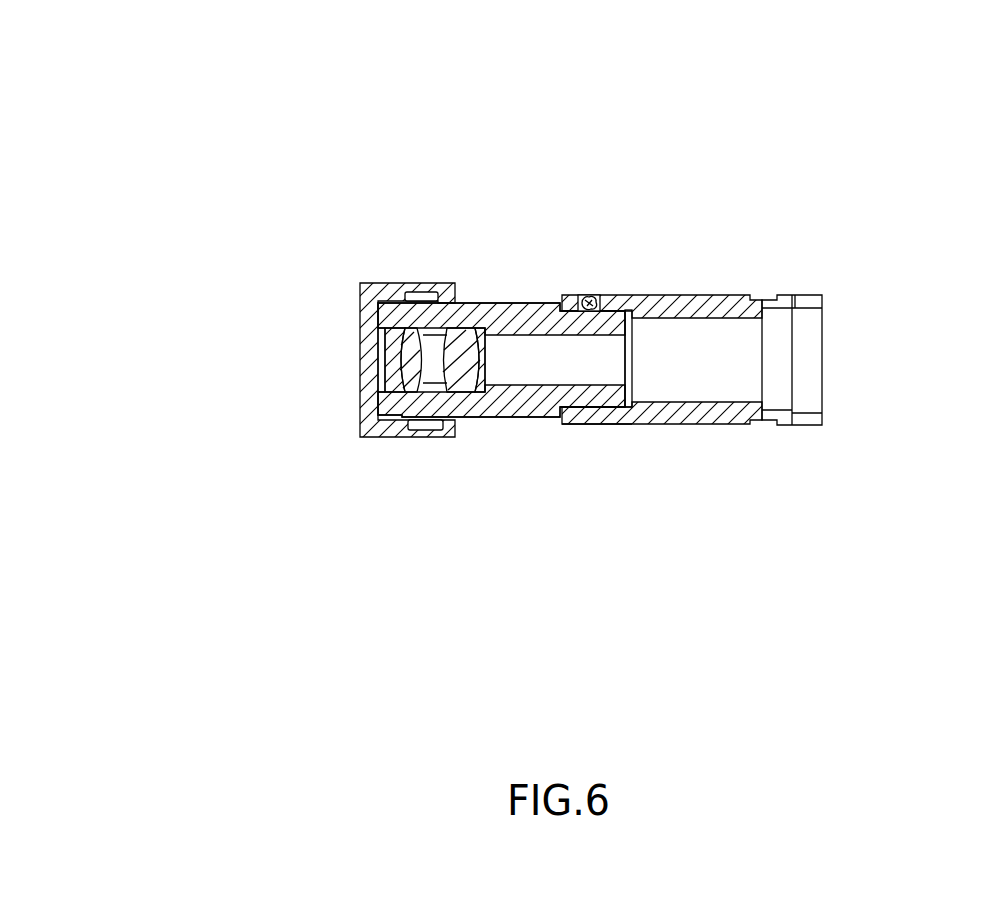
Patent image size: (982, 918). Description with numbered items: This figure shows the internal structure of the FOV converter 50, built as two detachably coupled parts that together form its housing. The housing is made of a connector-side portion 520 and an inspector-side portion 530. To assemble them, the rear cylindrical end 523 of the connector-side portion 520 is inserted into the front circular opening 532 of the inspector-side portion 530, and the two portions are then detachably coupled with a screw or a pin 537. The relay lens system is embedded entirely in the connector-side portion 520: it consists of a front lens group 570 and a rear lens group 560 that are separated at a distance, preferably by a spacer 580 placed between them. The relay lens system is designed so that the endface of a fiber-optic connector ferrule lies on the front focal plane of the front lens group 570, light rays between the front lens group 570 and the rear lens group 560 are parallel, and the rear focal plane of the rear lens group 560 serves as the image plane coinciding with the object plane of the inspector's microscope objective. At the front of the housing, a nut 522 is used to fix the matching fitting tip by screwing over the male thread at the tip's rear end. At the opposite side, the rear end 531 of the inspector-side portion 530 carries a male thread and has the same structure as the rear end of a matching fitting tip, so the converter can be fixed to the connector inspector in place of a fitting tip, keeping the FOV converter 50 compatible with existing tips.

The FOV converter 50 is at (550, 217).
The connector-side portion 520 is at (505, 300).
The nut 522 is at (385, 436).
The rear cylindrical end 523 is at (602, 405).
The inspector-side portion 530 is at (713, 295).
The rear end 531 is at (787, 425).
The front circular opening 532 is at (732, 627).
The screw or pin 537 is at (593, 294).
The rear lens group 560 is at (470, 387).
The front lens group 570 is at (412, 368).
The spacer 580 is at (432, 345).